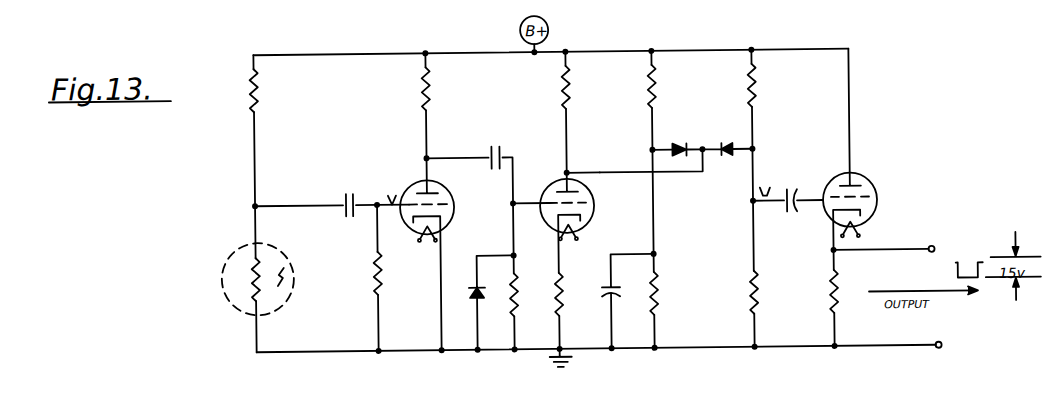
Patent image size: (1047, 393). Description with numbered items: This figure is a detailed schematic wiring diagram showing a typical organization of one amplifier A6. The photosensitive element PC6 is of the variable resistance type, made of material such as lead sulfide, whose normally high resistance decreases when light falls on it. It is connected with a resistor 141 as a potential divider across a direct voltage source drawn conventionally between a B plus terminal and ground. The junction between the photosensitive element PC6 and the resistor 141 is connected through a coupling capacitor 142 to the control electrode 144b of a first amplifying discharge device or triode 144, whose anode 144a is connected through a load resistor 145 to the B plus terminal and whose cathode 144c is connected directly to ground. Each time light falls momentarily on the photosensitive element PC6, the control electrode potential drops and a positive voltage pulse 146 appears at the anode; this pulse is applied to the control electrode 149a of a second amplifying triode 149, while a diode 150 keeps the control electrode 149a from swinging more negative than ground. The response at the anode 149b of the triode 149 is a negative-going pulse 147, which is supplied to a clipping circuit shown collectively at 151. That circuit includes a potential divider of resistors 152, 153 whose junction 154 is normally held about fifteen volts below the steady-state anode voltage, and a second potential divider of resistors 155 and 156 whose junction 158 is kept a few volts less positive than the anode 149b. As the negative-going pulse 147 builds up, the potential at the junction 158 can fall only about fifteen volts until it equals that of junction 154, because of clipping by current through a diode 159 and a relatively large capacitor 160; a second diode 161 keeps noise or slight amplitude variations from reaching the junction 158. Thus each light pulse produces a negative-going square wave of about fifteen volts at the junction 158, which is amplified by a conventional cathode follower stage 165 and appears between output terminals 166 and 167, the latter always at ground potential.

The resistor 141 is at (262, 103).
The coupling capacitor 142 is at (345, 194).
The first amplifying discharge device or triode 144 is at (431, 247).
The anode 144a is at (440, 193).
The control electrode 144b is at (447, 209).
The cathode 144c is at (379, 248).
The load resistor 145 is at (437, 81).
The positive voltage pulse 146 is at (458, 157).
The negative-going pulse 147 is at (578, 158).
The second amplifying triode 149 is at (579, 251).
The control electrode 149a is at (585, 216).
The anode 149b is at (584, 192).
The diode 150 is at (470, 301).
The clipping circuit 151 is at (722, 196).
The resistor 152 is at (662, 298).
The resistor 153 is at (661, 86).
The junction 154 is at (580, 158).
The resistor 155 is at (759, 299).
The resistor 156 is at (759, 83).
The junction 158 is at (759, 151).
The diode 159 is at (680, 145).
The capacitor 160 is at (600, 304).
The second diode 161 is at (727, 146).
The cathode follower stage 165 is at (880, 190).
The output terminal 166 is at (929, 250).
The output terminal 167 is at (940, 352).
The photosensitive element PC6 is at (220, 278).
The amplifier A6 is at (444, 38).